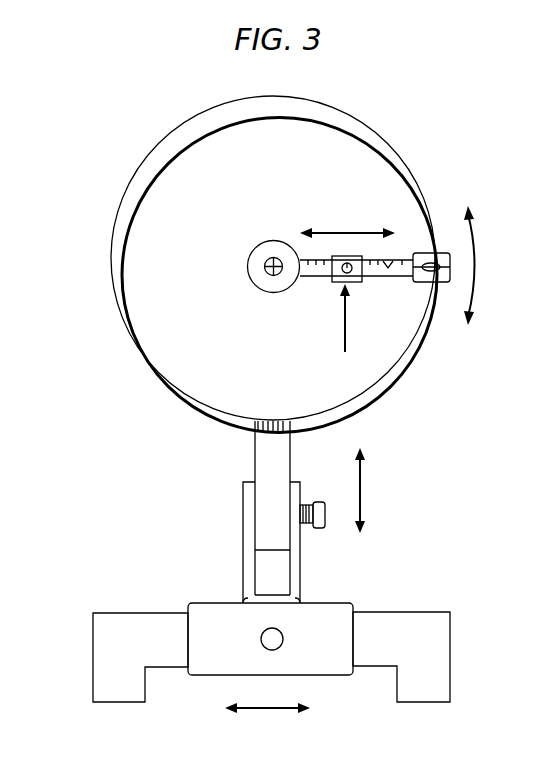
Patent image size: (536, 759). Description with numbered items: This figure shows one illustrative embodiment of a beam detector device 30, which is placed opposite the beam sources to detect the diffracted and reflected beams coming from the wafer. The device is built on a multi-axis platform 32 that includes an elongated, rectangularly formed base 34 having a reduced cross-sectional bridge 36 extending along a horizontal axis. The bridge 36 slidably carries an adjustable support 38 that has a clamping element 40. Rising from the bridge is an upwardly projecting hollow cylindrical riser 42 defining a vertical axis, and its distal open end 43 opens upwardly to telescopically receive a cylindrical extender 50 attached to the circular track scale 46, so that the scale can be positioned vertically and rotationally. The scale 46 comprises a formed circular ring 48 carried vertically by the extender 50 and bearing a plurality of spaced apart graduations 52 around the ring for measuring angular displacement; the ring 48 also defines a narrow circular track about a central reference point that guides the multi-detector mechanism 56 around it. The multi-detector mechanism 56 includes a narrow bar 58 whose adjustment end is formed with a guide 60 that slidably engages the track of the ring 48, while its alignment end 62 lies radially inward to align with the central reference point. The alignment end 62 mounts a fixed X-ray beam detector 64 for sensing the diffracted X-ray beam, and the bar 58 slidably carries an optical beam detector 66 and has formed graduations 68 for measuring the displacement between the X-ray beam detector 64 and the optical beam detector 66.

The beam detector device 30 is at (112, 407).
The multi-axis platform 32 is at (198, 567).
The base 34 is at (423, 612).
The bridge 36 is at (166, 668).
The adjustable support 38 is at (335, 676).
The clamping element 40 is at (284, 640).
The riser 42 is at (301, 582).
The distal open end 43 is at (253, 476).
The circular track scale 46 is at (386, 142).
The circular ring 48 is at (278, 118).
The cylindrical extender 50 is at (292, 466).
The graduations 52 is at (267, 419).
The multi-detector mechanism 56 is at (345, 329).
The bar 58 is at (310, 279).
The guide 60 is at (428, 264).
The alignment end 62 is at (249, 272).
The X-ray beam detector 64 is at (265, 276).
The optical beam detector 66 is at (353, 283).
The graduations 68 is at (389, 272).